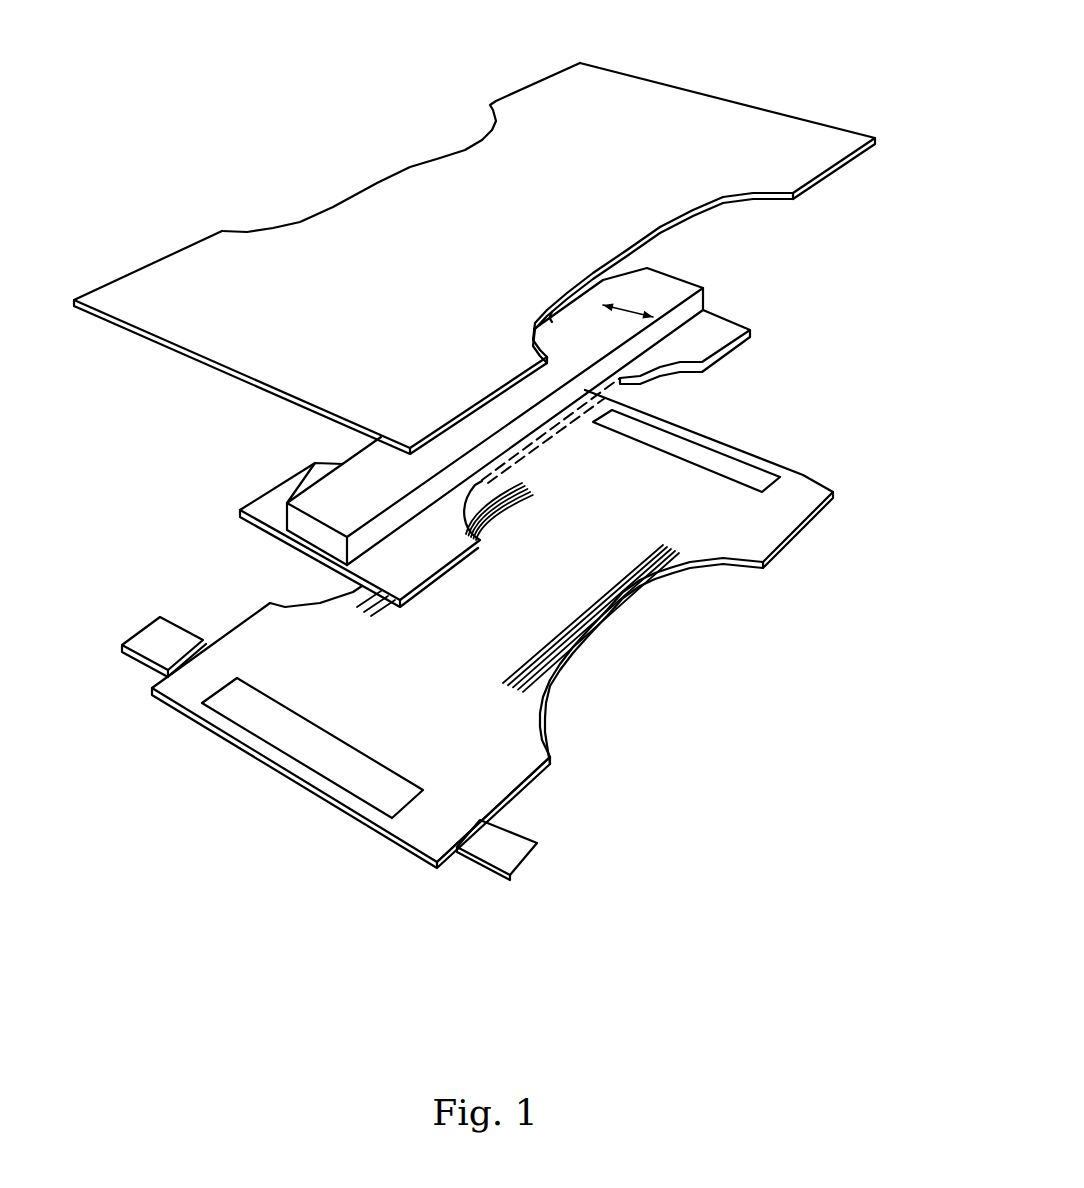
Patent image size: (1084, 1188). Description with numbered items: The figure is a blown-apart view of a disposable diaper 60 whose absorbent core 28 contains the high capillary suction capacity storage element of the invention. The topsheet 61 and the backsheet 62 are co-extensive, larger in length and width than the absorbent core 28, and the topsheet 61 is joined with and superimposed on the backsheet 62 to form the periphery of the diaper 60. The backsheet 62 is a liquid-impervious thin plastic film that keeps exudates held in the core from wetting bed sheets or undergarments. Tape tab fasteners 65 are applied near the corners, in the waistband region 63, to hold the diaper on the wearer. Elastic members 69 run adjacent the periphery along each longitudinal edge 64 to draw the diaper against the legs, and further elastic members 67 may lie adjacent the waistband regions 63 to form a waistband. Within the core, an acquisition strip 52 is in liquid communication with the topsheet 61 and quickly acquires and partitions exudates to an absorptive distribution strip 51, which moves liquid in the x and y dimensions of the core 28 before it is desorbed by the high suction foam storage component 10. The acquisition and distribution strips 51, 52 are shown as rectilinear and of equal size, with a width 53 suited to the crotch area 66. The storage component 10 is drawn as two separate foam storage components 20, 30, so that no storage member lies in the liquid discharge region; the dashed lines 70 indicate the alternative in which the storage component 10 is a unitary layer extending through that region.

The storage component 10 is at (532, 453).
The storage component 20 is at (723, 332).
The absorbent core 28 is at (532, 453).
The storage component 30 is at (438, 392).
The distribution strip 51 is at (307, 540).
The acquisition strip 52 is at (310, 502).
The width 53 is at (623, 303).
The diaper 60 is at (474, 455).
The topsheet 61 is at (722, 127).
The backsheet 62 is at (725, 542).
The waistband region 63 is at (643, 75).
The longitudinal edge 64 is at (373, 197).
The tape tab fasteners 65 is at (170, 648).
The crotch area 66 is at (463, 638).
The elastic members 67 is at (693, 453).
The elastic members 69 is at (640, 597).
The dashed lines 70 is at (532, 458).